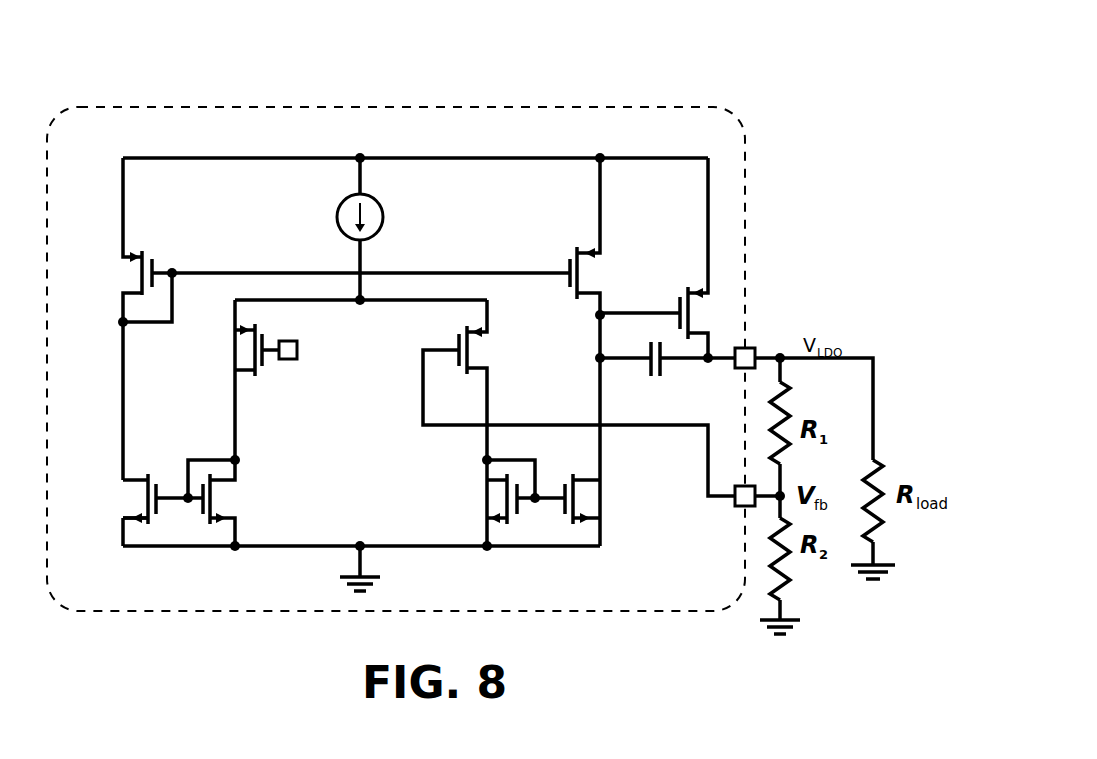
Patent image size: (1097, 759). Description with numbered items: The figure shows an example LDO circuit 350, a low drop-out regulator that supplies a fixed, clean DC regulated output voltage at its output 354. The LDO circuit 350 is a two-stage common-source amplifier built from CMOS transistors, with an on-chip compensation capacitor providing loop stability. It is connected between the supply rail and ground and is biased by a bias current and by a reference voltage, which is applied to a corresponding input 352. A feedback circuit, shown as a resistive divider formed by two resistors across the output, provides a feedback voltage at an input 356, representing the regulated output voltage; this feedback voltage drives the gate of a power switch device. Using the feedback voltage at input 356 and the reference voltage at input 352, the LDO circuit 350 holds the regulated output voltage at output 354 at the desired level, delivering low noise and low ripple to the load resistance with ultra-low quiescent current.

The LDO circuit 350 is at (638, 106).
The input 352 is at (288, 360).
The output 354 is at (746, 347).
The input 356 is at (742, 507).